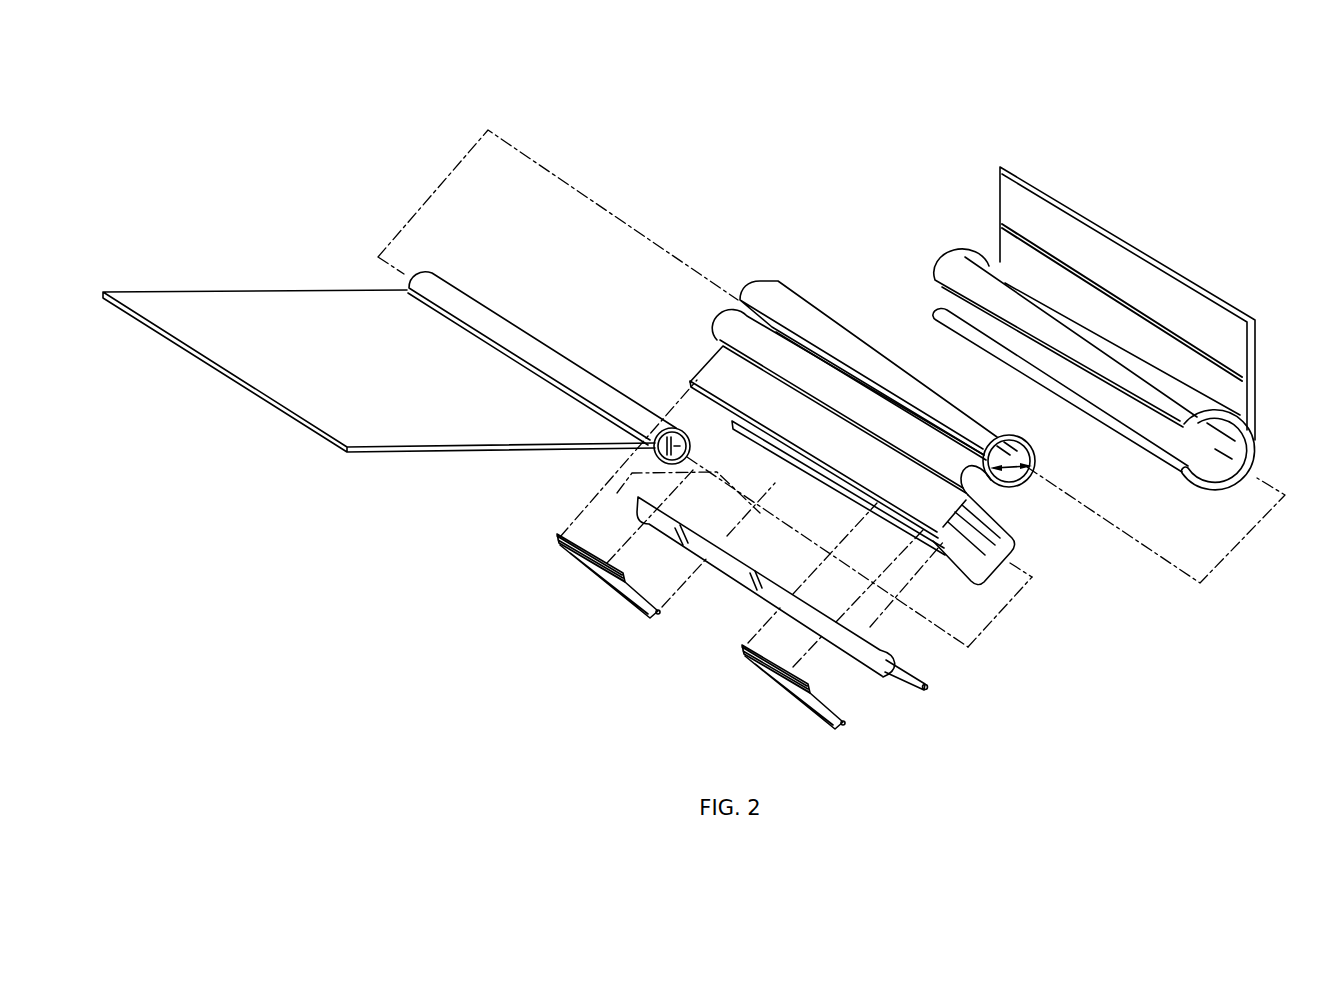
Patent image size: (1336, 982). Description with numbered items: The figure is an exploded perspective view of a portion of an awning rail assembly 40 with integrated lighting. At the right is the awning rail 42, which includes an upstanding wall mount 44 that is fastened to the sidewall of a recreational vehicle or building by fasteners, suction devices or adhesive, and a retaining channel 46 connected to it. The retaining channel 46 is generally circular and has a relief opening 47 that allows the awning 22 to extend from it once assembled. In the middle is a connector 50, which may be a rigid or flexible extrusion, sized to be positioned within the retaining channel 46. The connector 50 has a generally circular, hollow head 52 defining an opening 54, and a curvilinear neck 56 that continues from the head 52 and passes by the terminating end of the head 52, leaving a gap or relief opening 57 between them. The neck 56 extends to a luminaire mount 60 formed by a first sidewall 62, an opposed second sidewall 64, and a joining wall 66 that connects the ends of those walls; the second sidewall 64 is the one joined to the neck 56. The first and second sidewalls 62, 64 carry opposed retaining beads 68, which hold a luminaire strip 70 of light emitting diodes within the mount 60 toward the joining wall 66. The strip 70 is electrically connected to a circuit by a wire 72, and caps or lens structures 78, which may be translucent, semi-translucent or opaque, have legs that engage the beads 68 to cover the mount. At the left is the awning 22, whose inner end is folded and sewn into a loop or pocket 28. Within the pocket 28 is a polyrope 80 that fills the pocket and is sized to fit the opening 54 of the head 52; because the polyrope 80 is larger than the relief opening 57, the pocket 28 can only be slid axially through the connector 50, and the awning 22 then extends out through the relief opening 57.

The awning 22 is at (265, 318).
The pocket 28 is at (432, 282).
The awning rail assembly 40 is at (322, 133).
The awning rail 42 is at (1147, 203).
The wall mount 44 is at (1250, 360).
The retaining channel 46 is at (937, 243).
The relief opening 47 is at (1163, 447).
The connector 50 is at (663, 249).
The head 52 is at (763, 286).
The opening 54 is at (1035, 461).
The neck 56 is at (727, 326).
The relief opening 57 is at (1032, 470).
The luminaire mount 60 is at (1015, 589).
The first sidewall 62 is at (860, 473).
The second sidewall 64 is at (1008, 562).
The joining wall 66 is at (982, 498).
The retaining bead 68 is at (950, 540).
The luminaire strip 70 is at (738, 615).
The wire 72 is at (918, 690).
The cap 78 is at (583, 568).
The polyrope 80 is at (692, 452).